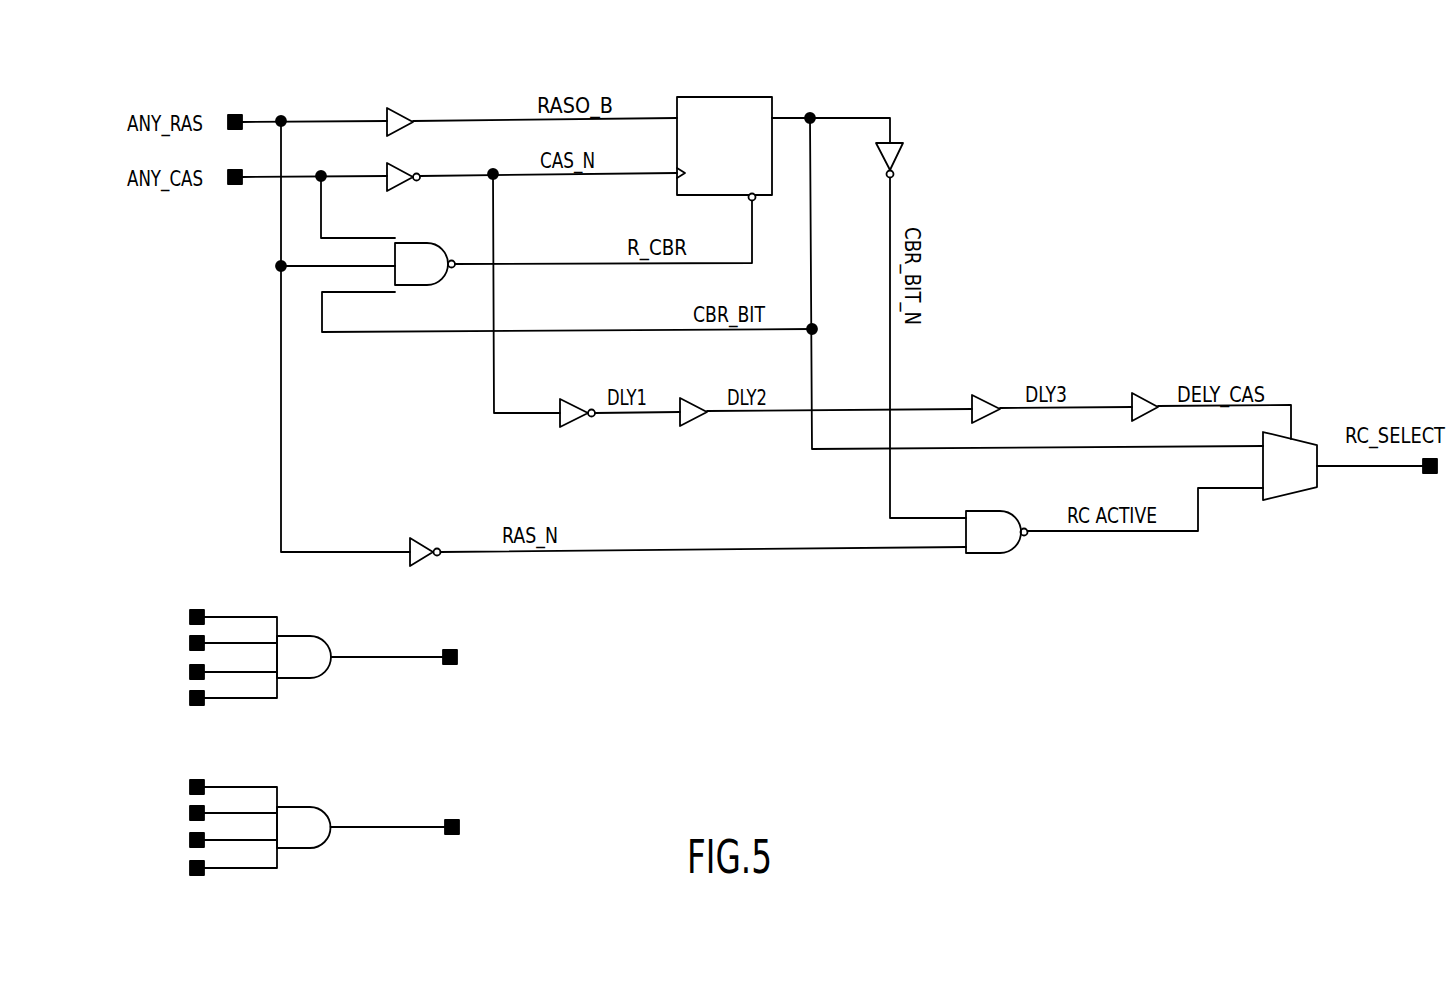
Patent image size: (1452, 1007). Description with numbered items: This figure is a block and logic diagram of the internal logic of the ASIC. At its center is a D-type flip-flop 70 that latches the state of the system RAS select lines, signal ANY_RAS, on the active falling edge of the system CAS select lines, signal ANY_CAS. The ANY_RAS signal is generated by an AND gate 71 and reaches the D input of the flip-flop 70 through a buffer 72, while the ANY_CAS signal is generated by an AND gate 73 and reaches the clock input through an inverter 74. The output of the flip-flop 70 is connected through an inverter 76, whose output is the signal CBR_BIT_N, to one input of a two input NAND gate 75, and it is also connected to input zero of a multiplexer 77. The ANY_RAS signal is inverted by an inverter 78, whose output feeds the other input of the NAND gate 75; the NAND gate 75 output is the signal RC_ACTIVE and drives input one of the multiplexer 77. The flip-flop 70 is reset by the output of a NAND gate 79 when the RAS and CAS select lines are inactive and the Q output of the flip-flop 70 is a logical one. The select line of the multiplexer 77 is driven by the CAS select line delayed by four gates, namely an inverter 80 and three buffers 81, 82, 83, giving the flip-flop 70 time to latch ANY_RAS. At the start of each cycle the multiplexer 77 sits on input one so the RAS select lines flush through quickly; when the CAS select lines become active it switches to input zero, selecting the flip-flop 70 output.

The D-type flip-flop 70 is at (747, 96).
The AND gate 71 is at (312, 636).
The buffer 72 is at (397, 107).
The AND gate 73 is at (315, 807).
The inverter 74 is at (406, 191).
The two input NAND gate 75 is at (988, 553).
The inverter 76 is at (903, 160).
The multiplexer 77 is at (1305, 440).
The inverter 78 is at (422, 566).
The NAND gate 79 is at (424, 285).
The inverter 80 is at (576, 427).
The buffer 81 is at (691, 426).
The buffer 82 is at (973, 395).
The buffer 83 is at (1133, 393).